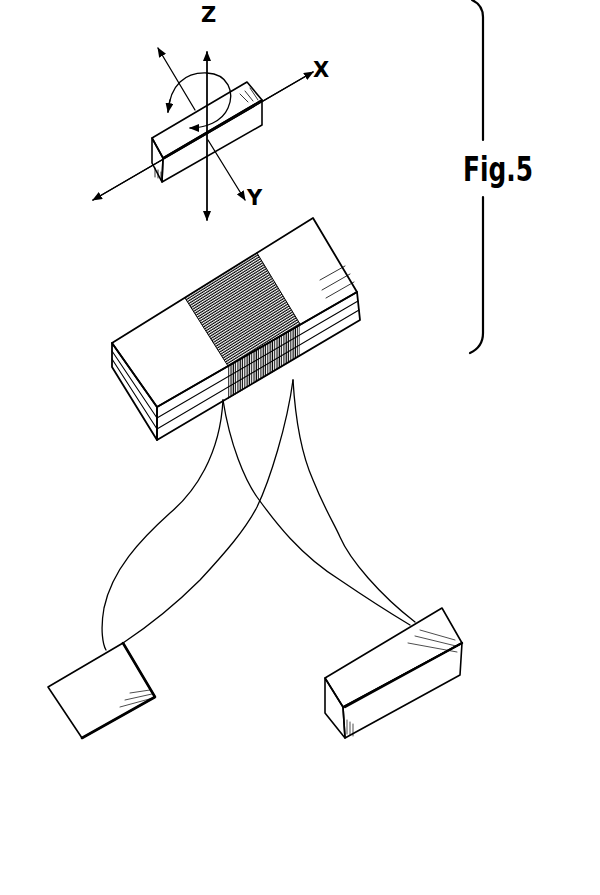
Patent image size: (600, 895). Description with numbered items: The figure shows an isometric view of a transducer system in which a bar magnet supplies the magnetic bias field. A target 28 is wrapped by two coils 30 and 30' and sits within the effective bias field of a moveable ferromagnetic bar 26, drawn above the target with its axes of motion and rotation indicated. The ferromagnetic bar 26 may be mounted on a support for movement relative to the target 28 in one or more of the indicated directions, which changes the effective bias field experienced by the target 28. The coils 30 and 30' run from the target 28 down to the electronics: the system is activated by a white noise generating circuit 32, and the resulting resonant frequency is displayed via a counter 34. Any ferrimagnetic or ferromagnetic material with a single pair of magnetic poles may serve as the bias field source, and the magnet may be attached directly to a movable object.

The moveable ferromagnetic bar 26 is at (240, 82).
The target 28 is at (141, 341).
The coil 30 is at (256, 525).
The coil 30' is at (269, 511).
The white noise generating circuit 32 is at (132, 681).
The counter 34 is at (331, 672).